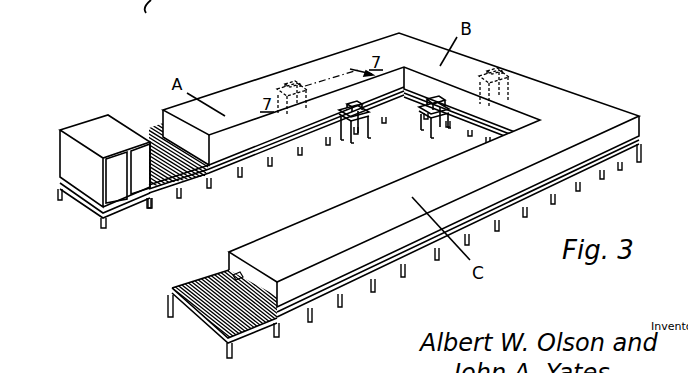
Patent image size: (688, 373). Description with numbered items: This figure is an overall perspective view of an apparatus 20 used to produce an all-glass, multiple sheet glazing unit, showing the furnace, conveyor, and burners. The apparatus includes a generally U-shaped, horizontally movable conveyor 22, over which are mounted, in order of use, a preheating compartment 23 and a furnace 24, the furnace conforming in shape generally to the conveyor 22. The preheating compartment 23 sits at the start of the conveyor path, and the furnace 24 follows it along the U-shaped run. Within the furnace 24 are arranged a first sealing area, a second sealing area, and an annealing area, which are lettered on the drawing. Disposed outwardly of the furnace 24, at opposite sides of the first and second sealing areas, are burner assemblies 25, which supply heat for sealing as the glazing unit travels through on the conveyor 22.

The apparatus 20 is at (210, 87).
The conveyor 22 is at (166, 159).
The preheating compartment 23 is at (107, 130).
The furnace 24 is at (260, 88).
The burner assemblies 25 is at (353, 124).